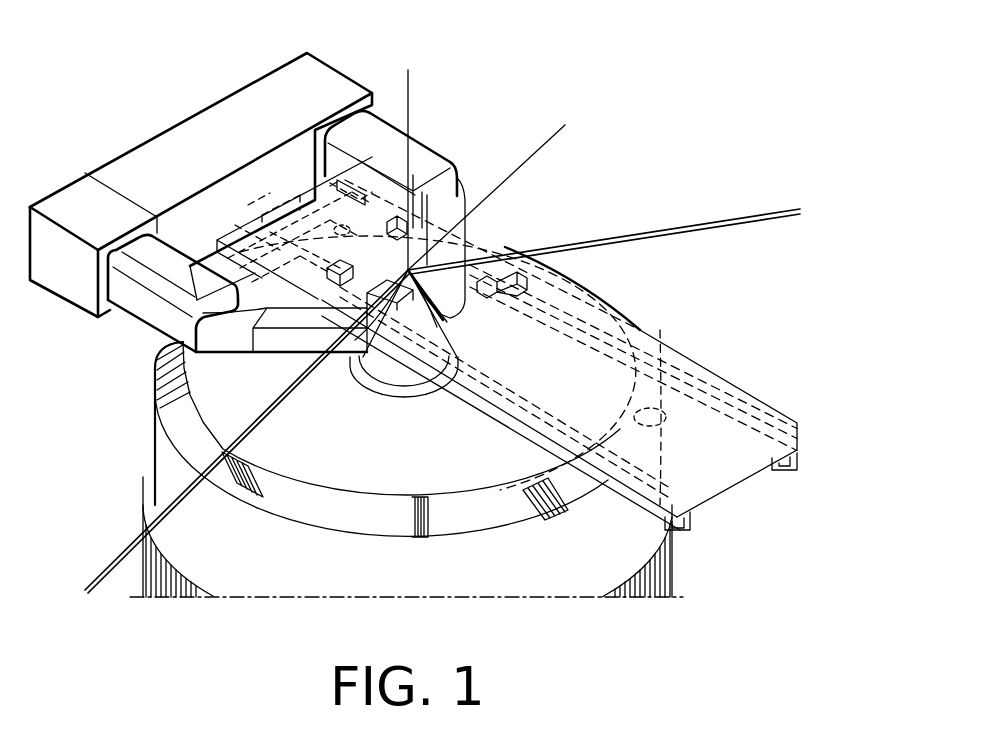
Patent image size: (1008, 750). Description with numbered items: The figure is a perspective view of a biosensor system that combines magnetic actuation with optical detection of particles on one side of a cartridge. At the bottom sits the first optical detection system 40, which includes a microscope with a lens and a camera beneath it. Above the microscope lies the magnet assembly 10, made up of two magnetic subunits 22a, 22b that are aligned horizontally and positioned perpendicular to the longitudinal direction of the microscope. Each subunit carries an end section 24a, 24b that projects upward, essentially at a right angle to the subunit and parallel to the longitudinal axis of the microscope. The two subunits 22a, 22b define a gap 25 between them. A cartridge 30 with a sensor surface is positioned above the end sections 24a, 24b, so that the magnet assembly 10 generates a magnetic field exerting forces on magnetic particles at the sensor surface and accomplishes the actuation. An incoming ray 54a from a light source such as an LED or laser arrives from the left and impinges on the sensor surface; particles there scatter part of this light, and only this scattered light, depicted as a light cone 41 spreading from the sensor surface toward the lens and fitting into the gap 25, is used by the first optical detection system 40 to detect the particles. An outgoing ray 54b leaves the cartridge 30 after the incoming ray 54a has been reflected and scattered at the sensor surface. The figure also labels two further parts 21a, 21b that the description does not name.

The magnet assembly 10 is at (333, 75).
The first holding block 21a is at (130, 303).
The second holding block 21b is at (384, 135).
The magnetic subunit 22a is at (229, 340).
The magnetic subunit 22b is at (447, 205).
The end section 24a is at (345, 355).
The end section 24b is at (440, 268).
The gap 25 is at (440, 315).
The cartridge 30 is at (736, 392).
The first optical detection system 40 is at (163, 457).
The light cone 41 is at (390, 385).
The incoming ray 54a is at (90, 582).
The outgoing ray 54b is at (683, 227).